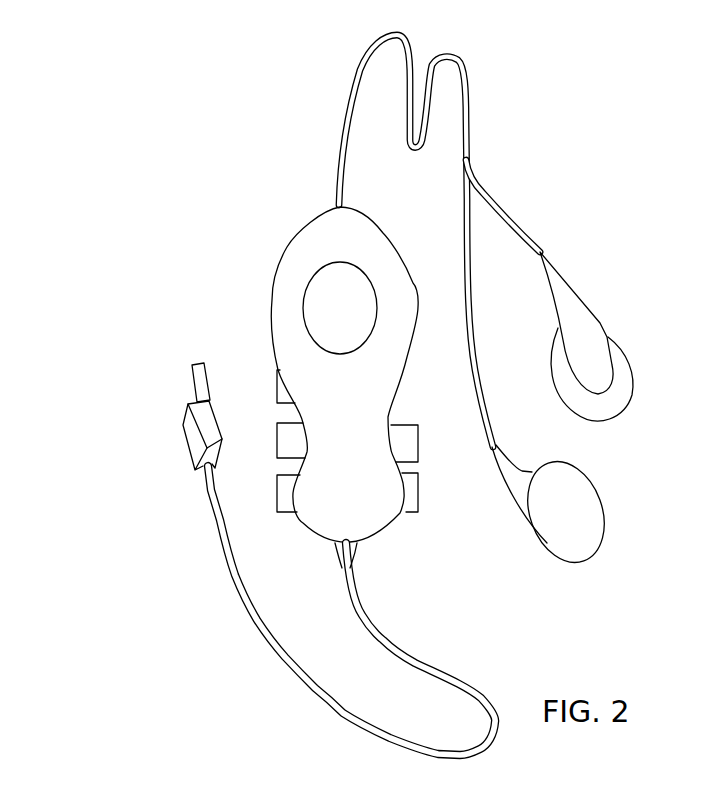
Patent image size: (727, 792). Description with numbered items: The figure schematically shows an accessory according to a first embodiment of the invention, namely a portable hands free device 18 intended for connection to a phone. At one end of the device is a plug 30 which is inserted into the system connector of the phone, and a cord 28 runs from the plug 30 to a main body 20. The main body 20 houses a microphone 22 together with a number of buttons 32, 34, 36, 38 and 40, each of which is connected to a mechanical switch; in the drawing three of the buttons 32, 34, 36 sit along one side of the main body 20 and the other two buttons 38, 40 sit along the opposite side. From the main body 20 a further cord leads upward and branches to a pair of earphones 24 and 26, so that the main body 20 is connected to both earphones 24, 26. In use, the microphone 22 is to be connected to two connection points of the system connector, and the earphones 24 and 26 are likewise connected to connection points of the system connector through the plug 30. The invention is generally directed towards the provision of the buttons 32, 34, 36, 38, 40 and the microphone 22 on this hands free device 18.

The portable hands free device 18 is at (192, 205).
The main body 20 is at (295, 237).
The microphone 22 is at (303, 315).
The earphone 24 is at (590, 307).
The earphone 26 is at (528, 520).
The cord 28 is at (320, 687).
The plug 30 is at (185, 445).
The button 32 is at (275, 377).
The button 34 is at (293, 420).
The button 36 is at (282, 472).
The button 38 is at (408, 423).
The button 40 is at (418, 483).